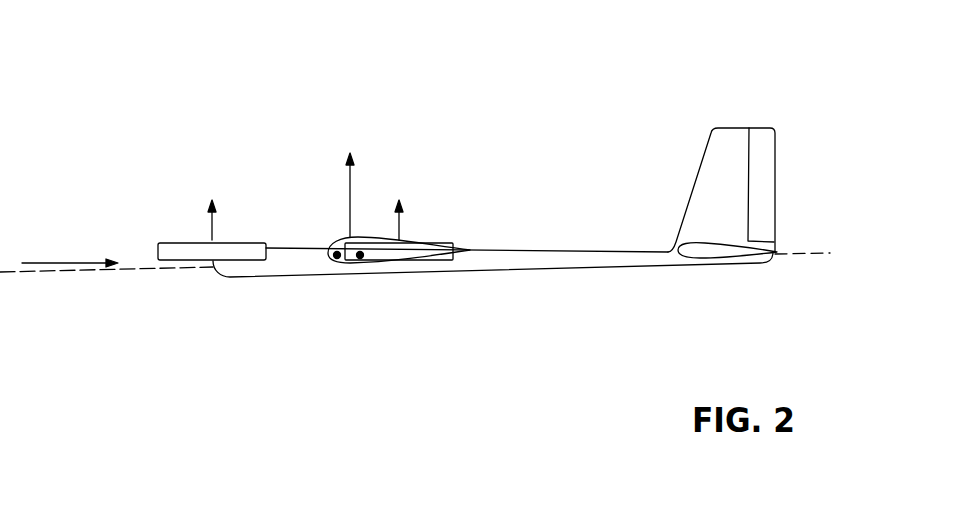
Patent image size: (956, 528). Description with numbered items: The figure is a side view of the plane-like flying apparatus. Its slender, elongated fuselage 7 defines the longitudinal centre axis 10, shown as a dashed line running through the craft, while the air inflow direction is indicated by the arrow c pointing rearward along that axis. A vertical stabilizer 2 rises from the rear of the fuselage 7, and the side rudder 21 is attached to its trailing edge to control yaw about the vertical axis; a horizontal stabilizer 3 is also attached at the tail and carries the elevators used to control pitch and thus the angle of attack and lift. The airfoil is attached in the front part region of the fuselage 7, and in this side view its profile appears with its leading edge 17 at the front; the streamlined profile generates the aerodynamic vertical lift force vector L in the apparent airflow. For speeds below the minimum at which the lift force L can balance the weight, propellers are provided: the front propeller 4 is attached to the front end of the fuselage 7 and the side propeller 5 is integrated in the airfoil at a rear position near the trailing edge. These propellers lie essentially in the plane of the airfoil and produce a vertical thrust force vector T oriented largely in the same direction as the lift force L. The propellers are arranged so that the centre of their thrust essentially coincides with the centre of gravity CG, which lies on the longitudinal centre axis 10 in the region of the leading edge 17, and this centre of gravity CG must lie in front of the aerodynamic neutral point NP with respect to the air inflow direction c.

The vertical stabilizer 2 is at (737, 142).
The side rudder 21 is at (762, 178).
The horizontal stabilizer 3 is at (693, 253).
The front propeller 4 is at (170, 255).
The side propeller 5 is at (430, 257).
The fuselage 7 is at (557, 259).
The leading edge 17 is at (330, 245).
The longitudinal centre axis 10 is at (825, 252).
The air inflow direction c is at (53, 262).
The aerodynamic lift force vector L is at (349, 202).
The vertical thrust force vector T is at (210, 229).
The centre of gravity CG is at (348, 265).
The aerodynamic neutral point NP is at (368, 262).